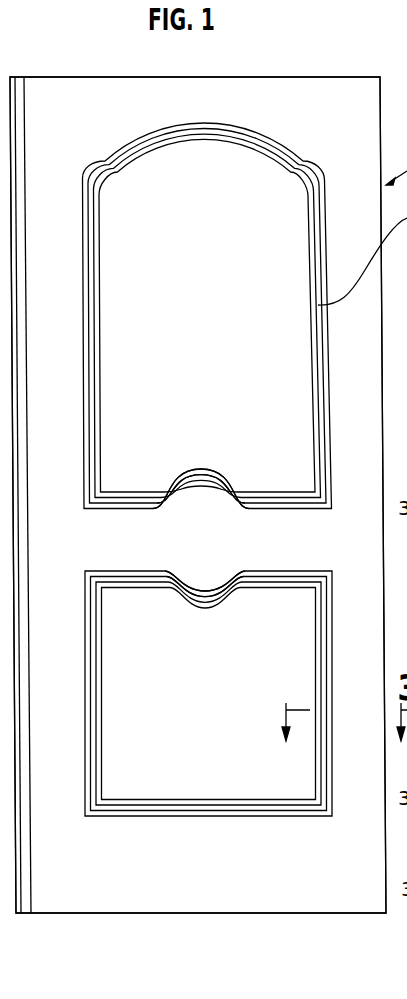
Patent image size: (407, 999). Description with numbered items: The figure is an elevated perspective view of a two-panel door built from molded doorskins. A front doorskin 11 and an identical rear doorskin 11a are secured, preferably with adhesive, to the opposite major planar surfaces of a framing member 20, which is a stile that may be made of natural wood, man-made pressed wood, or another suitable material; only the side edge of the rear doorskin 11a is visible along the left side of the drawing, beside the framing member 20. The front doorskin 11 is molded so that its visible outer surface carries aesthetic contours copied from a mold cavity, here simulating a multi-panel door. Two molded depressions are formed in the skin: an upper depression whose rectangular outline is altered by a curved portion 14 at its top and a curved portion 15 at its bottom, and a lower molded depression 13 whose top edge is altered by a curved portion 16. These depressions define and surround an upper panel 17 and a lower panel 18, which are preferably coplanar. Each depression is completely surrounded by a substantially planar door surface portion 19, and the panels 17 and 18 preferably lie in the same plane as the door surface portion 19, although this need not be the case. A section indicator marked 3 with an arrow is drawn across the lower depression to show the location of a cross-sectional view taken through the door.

The front doorskin 11 is at (141, 88).
The rear doorskin 11a is at (9, 84).
The framing member 20 is at (22, 80).
The door surface portion 19 is at (348, 121).
The curved portion 14 is at (231, 138).
The panel 17 is at (205, 294).
The curved portion 15 is at (225, 482).
The molded depression 13 is at (319, 630).
The panel 18 is at (196, 687).
The curved portion 16 is at (211, 600).
The section line 3- 3 is at (293, 702).